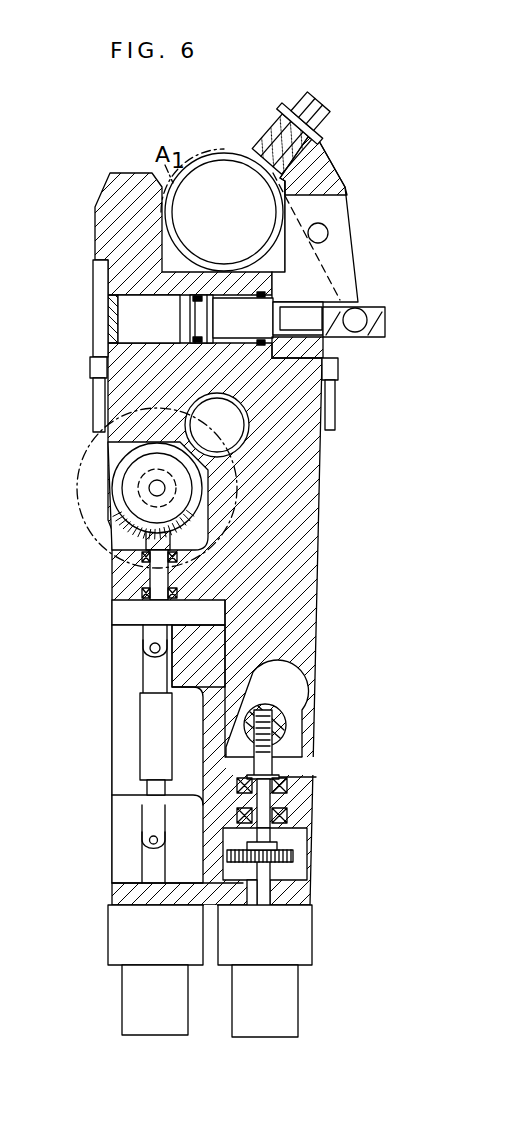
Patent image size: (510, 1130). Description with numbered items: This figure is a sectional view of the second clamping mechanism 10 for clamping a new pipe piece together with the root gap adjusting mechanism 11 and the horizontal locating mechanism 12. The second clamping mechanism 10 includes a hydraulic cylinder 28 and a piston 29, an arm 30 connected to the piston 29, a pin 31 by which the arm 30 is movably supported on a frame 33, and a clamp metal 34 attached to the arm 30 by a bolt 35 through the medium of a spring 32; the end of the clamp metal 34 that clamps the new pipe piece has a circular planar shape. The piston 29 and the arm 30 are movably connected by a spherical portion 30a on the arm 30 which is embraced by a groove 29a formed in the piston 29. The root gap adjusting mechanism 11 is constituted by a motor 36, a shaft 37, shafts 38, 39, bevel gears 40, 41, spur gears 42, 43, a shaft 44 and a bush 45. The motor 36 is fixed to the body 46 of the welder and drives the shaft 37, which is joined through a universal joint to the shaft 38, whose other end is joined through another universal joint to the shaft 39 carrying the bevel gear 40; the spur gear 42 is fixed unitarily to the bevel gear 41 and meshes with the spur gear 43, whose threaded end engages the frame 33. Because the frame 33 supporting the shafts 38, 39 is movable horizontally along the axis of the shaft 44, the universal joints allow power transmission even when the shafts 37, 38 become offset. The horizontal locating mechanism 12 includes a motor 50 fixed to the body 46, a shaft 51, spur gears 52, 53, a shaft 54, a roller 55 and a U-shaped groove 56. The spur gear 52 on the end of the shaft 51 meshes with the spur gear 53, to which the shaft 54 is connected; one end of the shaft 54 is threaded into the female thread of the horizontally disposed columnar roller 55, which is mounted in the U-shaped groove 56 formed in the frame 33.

The second clamping mechanism 10 is at (388, 218).
The root gap adjusting mechanism 11 is at (143, 718).
The horizontal locating mechanism 12 is at (352, 623).
The hydraulic cylinder 28 is at (123, 320).
The piston 29 is at (385, 305).
The groove 29a is at (345, 333).
The arm 30 is at (353, 274).
The spherical portion 30a is at (387, 323).
The pin 31 is at (326, 233).
The spring 32 is at (309, 148).
The frame 33 is at (103, 198).
The clamp metal 34 is at (267, 133).
The bolt 35 is at (322, 122).
The motor 36 is at (127, 1002).
The shaft 37 is at (140, 853).
The shaft 38 is at (140, 745).
The shaft 39 is at (130, 634).
The bevel gear 40 is at (130, 540).
The bevel gear 41 is at (112, 503).
The spur gear 42 is at (103, 460).
The spur gear 43 is at (100, 434).
The shaft 44 is at (243, 447).
The bush 45 is at (244, 427).
The body 46 is at (112, 890).
The motor 50 is at (297, 990).
The shaft 51 is at (292, 884).
The spur gear 52 is at (298, 858).
The spur gear 53 is at (287, 845).
The shaft 54 is at (283, 770).
The roller 55 is at (283, 720).
The U-shaped groove 56 is at (288, 694).